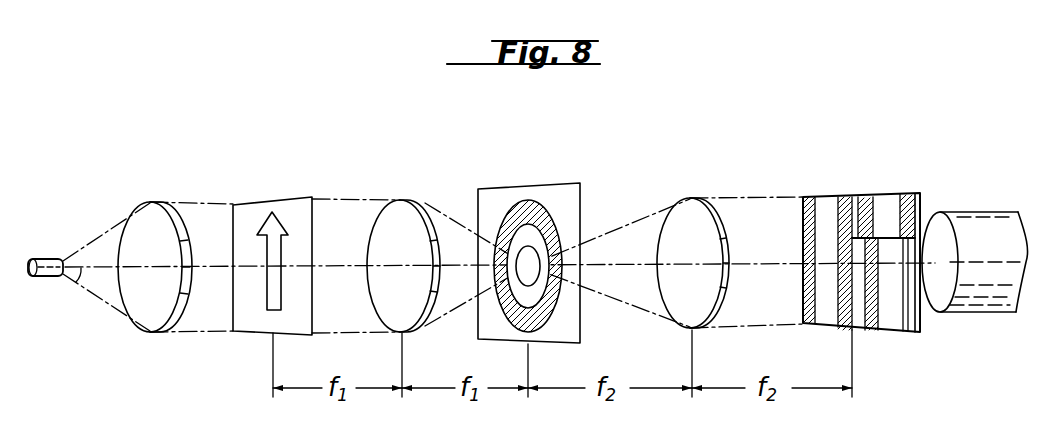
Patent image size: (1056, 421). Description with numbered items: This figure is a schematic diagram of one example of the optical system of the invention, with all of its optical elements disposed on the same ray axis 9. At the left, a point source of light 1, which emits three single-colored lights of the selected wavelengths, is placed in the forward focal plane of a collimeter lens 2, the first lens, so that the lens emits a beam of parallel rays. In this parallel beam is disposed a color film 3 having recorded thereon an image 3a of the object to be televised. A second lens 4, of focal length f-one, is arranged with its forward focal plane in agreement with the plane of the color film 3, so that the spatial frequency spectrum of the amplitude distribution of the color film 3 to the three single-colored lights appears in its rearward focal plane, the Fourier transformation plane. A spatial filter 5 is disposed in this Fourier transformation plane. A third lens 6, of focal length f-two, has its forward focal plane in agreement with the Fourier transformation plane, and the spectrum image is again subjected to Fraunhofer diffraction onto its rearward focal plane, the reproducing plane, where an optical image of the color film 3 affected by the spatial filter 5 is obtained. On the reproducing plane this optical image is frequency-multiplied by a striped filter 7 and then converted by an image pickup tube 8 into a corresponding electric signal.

The point source of light 1 is at (48, 258).
The collimeter lens 2 is at (152, 201).
The color film 3 is at (258, 265).
The image 3a is at (268, 308).
The second lens 4 is at (402, 200).
The spatial filter 5 is at (528, 187).
The third lens 6 is at (690, 197).
The striped filter 7 is at (844, 196).
The image pickup tube 8 is at (978, 212).
The ray axis 9 is at (78, 283).